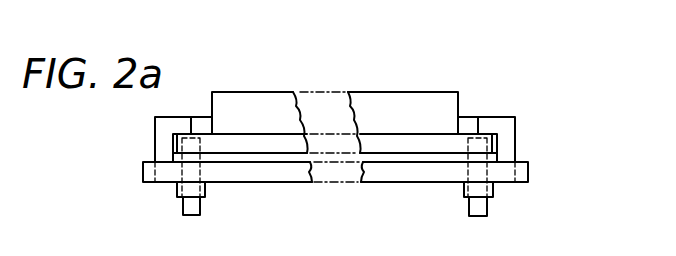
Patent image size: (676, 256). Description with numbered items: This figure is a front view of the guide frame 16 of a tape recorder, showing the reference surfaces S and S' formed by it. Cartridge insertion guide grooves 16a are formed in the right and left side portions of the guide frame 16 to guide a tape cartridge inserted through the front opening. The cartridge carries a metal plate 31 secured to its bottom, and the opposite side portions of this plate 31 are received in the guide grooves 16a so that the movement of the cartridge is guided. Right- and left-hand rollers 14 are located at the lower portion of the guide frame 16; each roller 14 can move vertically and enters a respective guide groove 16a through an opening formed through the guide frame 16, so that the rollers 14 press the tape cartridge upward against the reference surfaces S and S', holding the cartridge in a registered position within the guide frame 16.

The roller 14 is at (183, 207).
The guide frame 16 is at (517, 147).
The cartridge insertion guide groove 16a is at (176, 158).
The plate 31 is at (423, 143).
The reference surface S is at (410, 105).
The reference surface S' is at (252, 105).